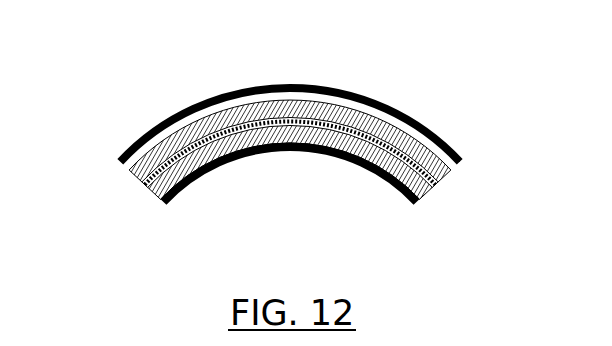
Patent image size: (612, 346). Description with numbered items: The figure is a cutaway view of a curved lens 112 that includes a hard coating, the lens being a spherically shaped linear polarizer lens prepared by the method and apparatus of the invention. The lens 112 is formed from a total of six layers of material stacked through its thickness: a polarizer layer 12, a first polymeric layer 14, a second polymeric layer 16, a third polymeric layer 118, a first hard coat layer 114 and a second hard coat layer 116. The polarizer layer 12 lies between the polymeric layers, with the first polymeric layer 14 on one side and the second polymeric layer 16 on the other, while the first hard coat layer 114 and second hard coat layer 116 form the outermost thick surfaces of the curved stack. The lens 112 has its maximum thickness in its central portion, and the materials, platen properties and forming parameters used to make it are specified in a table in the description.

The lens 112 is at (146, 67).
The first hard coat layer 114 is at (393, 110).
The second hard coat layer 116 is at (417, 200).
The third polymeric layer 118 is at (457, 162).
The second polymeric layer 16 is at (134, 172).
The polarizer layer 12 is at (142, 180).
The first polymeric layer 14 is at (147, 187).